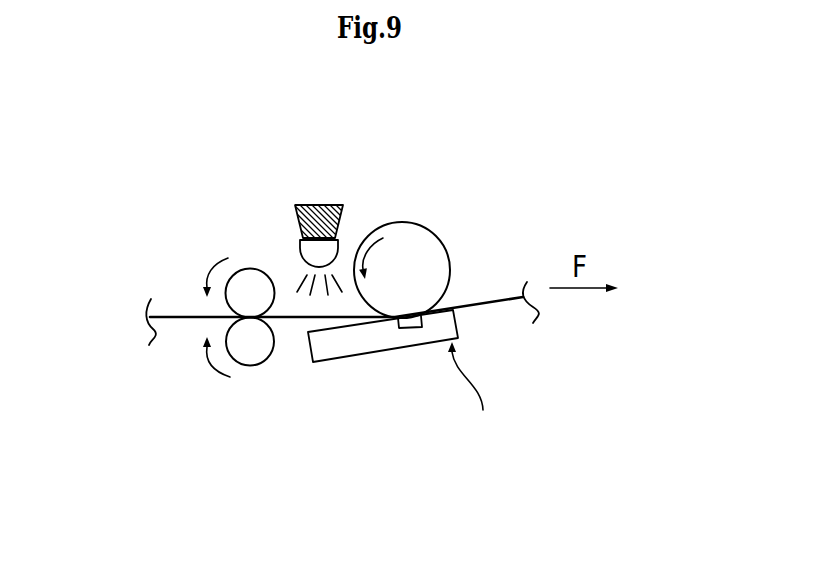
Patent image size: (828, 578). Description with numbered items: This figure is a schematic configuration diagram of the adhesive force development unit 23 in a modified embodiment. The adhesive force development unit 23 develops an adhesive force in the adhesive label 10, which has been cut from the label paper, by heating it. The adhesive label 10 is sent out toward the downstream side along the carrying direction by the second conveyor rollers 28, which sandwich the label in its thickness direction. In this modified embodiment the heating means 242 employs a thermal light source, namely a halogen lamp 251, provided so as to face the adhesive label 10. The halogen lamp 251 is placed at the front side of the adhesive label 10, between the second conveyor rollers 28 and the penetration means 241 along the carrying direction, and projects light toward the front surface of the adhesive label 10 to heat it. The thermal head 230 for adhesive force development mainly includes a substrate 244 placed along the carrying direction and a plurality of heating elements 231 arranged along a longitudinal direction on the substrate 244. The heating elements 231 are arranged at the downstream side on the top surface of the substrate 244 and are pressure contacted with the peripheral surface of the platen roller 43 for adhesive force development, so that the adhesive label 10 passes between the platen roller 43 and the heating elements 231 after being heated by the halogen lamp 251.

The adhesive label 10 is at (177, 318).
The adhesive force development unit 23 is at (239, 293).
The second conveyor rollers 28 is at (255, 352).
The platen roller for adhesive force development 43 is at (400, 238).
The thermal head for adhesive force development 230 is at (478, 395).
The heating elements 231 is at (408, 326).
The penetration means 241 is at (437, 314).
The heating means 242 is at (326, 193).
The substrate 244 is at (348, 343).
The halogen lamp 251 is at (310, 208).